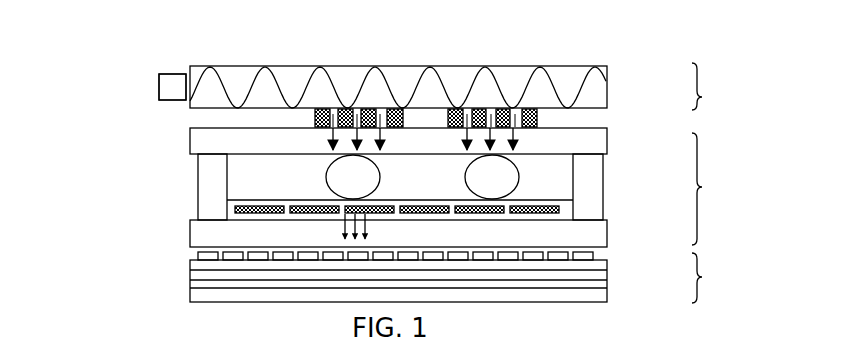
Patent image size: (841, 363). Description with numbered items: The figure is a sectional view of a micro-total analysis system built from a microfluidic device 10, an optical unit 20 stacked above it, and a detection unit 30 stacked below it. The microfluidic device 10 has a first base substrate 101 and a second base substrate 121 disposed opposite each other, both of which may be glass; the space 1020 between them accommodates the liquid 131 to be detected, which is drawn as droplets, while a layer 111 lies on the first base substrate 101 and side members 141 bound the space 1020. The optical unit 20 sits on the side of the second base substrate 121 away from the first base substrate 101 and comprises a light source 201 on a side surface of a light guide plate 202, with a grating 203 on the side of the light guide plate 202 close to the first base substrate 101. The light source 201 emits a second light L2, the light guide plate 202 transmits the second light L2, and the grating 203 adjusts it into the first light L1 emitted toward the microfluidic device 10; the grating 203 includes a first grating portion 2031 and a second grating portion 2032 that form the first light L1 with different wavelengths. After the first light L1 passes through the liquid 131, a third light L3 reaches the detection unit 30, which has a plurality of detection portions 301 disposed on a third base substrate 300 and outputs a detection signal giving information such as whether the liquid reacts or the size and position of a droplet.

The microfluidic device 10 is at (713, 189).
The optical unit 20 is at (713, 87).
The detection unit 30 is at (713, 278).
The first base substrate 101 is at (230, 236).
The thin film transistor layer 111 is at (236, 209).
The second base substrate 121 is at (210, 143).
The liquid to be detected 131 is at (505, 174).
The sealant / spacer 141 is at (604, 190).
The space 1020 is at (262, 183).
The light source 201 is at (212, 53).
The light guide plate 202 is at (422, 54).
The grating 203 is at (359, 120).
The first grating portion 2031 is at (315, 118).
The second grating portion 2032 is at (540, 117).
The third base substrate 300 is at (190, 272).
The detection portions 301 is at (198, 256).
The first light L1 is at (423, 139).
The second light L2 is at (171, 75).
The third light L3 is at (364, 230).